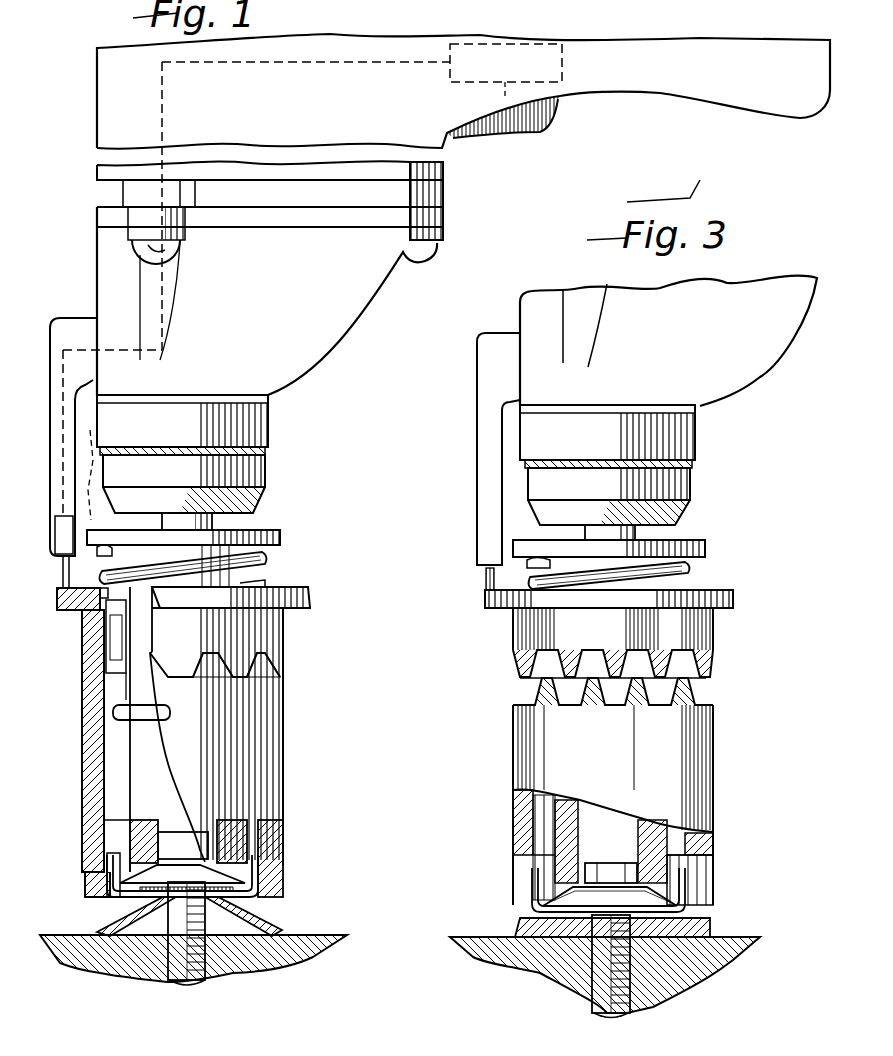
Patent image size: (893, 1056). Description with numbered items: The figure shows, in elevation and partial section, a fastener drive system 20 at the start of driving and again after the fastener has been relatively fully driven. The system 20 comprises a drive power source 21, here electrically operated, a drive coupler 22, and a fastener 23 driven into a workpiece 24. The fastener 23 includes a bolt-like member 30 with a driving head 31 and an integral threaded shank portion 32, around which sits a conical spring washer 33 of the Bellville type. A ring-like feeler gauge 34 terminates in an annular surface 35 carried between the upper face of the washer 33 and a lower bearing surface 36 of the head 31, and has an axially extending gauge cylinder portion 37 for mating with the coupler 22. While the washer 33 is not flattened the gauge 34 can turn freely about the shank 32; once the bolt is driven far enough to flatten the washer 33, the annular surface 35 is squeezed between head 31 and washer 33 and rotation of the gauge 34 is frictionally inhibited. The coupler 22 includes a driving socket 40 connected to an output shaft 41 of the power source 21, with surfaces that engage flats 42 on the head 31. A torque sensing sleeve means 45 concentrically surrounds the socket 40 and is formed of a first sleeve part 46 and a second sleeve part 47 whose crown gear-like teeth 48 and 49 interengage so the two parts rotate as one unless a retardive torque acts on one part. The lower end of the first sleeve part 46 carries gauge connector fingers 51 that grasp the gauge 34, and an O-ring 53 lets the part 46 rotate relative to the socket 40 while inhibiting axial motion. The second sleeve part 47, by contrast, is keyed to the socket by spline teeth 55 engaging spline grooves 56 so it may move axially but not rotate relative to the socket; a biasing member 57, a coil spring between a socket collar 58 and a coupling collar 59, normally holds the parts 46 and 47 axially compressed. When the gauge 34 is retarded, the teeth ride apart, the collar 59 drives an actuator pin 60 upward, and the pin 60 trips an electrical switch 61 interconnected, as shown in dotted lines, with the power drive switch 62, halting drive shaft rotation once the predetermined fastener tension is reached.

In FIG. 1, the fastener drive system 20 is at (316, 436).
In FIG. 3, the fastener drive system 20 is at (750, 482).
In FIG. 1, the drive power source 21 is at (118, 83).
In FIG. 3, the drive power source 21 is at (740, 340).
In FIG. 1, the drive coupler 22 is at (310, 686).
In FIG. 3, the drive coupler 22 is at (742, 686).
In FIG. 1, the fastener 23 is at (296, 930).
In FIG. 3, the fastener 23 is at (734, 922).
In FIG. 1, the workpiece 24 is at (315, 958).
In FIG. 3, the workpiece 24 is at (548, 972).
In FIG. 1, the bolt-like member 30 is at (175, 985).
In FIG. 1, the driving head 31 is at (225, 815).
In FIG. 3, the driving head 31 is at (670, 822).
In FIG. 1, the threaded shank portion 32 is at (195, 983).
In FIG. 3, the threaded shank portion 32 is at (611, 966).
In FIG. 1, the conical spring washer 33 is at (105, 918).
In FIG. 3, the conical spring washer 33 is at (515, 925).
In FIG. 1, the feeler gauge 34 is at (280, 866).
In FIG. 3, the feeler gauge 34 is at (690, 878).
In FIG. 1, the annular surface 35 is at (273, 920).
In FIG. 3, the annular surface 35 is at (708, 908).
In FIG. 1, the lower bearing surface 36 is at (44, 905).
In FIG. 1, the gauge cylinder portion 37 is at (98, 860).
In FIG. 1, the driving socket 40 is at (86, 764).
In FIG. 1, the output shaft 41 is at (212, 525).
In FIG. 1, the flats 42 is at (140, 812).
In FIG. 1, the torque sensing sleeve means 45 is at (73, 682).
In FIG. 1, the first sleeve part 46 is at (284, 746).
In FIG. 3, the first sleeve part 46 is at (692, 730).
In FIG. 1, the second sleeve part 47 is at (278, 630).
In FIG. 3, the second sleeve part 47 is at (540, 630).
In FIG. 1, the crown gear-like teeth 48 is at (276, 655).
In FIG. 3, the crown gear-like teeth 48 is at (700, 658).
In FIG. 1, the crown gear-like teeth 49 is at (212, 672).
In FIG. 3, the crown gear-like teeth 49 is at (683, 695).
In FIG. 1, the gauge connector fingers 51 is at (278, 878).
In FIG. 3, the gauge connector fingers 51 is at (608, 890).
In FIG. 1, the O-ring 53 is at (115, 713).
In FIG. 1, the spline teeth 55 is at (112, 630).
In FIG. 1, the spline grooves 56 is at (70, 608).
In FIG. 1, the biasing member 57 is at (268, 560).
In FIG. 3, the biasing member 57 is at (692, 572).
In FIG. 1, the socket collar 58 is at (282, 537).
In FIG. 3, the socket collar 58 is at (609, 548).
In FIG. 1, the coupling collar 59 is at (310, 592).
In FIG. 3, the coupling collar 59 is at (609, 599).
In FIG. 1, the actuator pin 60 is at (62, 572).
In FIG. 3, the actuator pin 60 is at (488, 584).
In FIG. 1, the electrical switch 61 is at (104, 432).
In FIG. 1, the power drive switch 62 is at (553, 44).